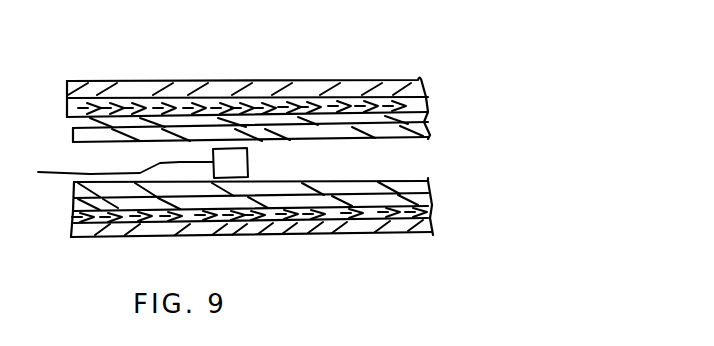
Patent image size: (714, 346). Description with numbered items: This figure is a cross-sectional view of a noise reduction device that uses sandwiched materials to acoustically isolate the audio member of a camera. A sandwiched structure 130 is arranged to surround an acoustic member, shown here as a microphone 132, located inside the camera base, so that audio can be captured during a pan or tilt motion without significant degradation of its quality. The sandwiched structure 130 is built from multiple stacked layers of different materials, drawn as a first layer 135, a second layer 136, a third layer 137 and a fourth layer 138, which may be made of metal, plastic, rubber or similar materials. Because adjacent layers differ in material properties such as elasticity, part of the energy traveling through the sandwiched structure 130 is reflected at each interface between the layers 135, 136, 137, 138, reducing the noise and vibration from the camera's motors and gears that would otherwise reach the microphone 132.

The sandwiched structure 130 is at (536, 34).
The microphone 132 is at (248, 160).
The layer 135 is at (433, 86).
The layer 136 is at (433, 102).
The layer 137 is at (433, 118).
The layer 138 is at (433, 134).